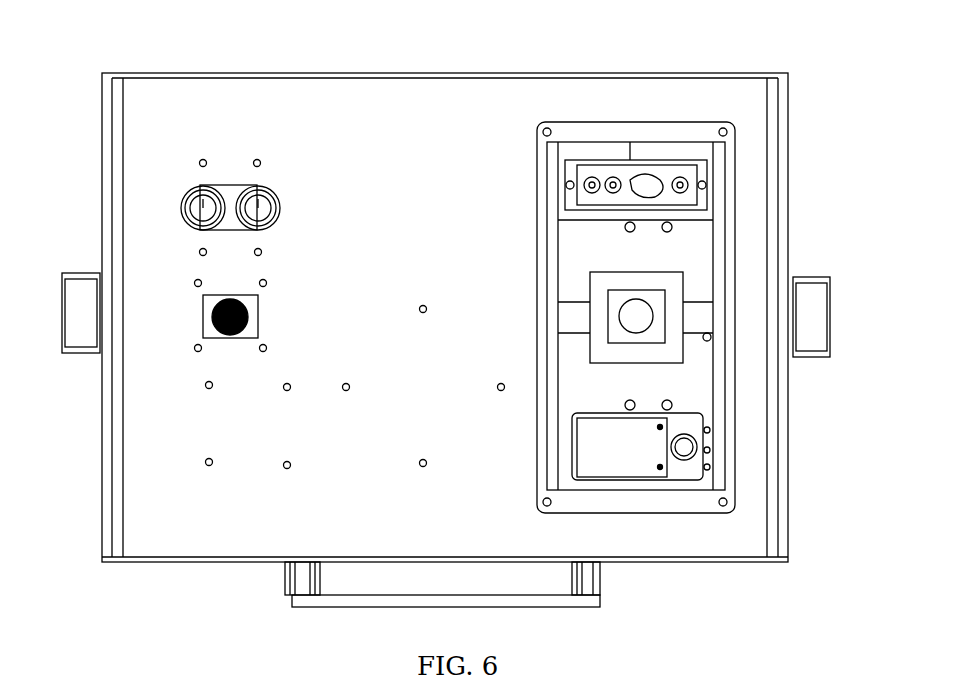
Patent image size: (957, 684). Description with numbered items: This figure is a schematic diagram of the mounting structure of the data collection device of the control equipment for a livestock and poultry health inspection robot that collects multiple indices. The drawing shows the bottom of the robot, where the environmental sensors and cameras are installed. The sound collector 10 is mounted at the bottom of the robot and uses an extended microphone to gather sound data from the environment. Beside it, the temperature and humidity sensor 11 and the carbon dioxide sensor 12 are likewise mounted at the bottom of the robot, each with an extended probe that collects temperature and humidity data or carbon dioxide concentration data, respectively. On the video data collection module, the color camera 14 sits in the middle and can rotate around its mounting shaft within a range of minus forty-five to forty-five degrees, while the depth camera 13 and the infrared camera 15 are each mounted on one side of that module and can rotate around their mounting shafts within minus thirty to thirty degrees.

The sound collector 10 is at (213, 302).
The temperature and humidity sensor 11 is at (202, 187).
The carbon dioxide sensor 12 is at (253, 185).
The depth camera 13 is at (643, 182).
The color camera 14 is at (647, 311).
The infrared camera 15 is at (645, 442).